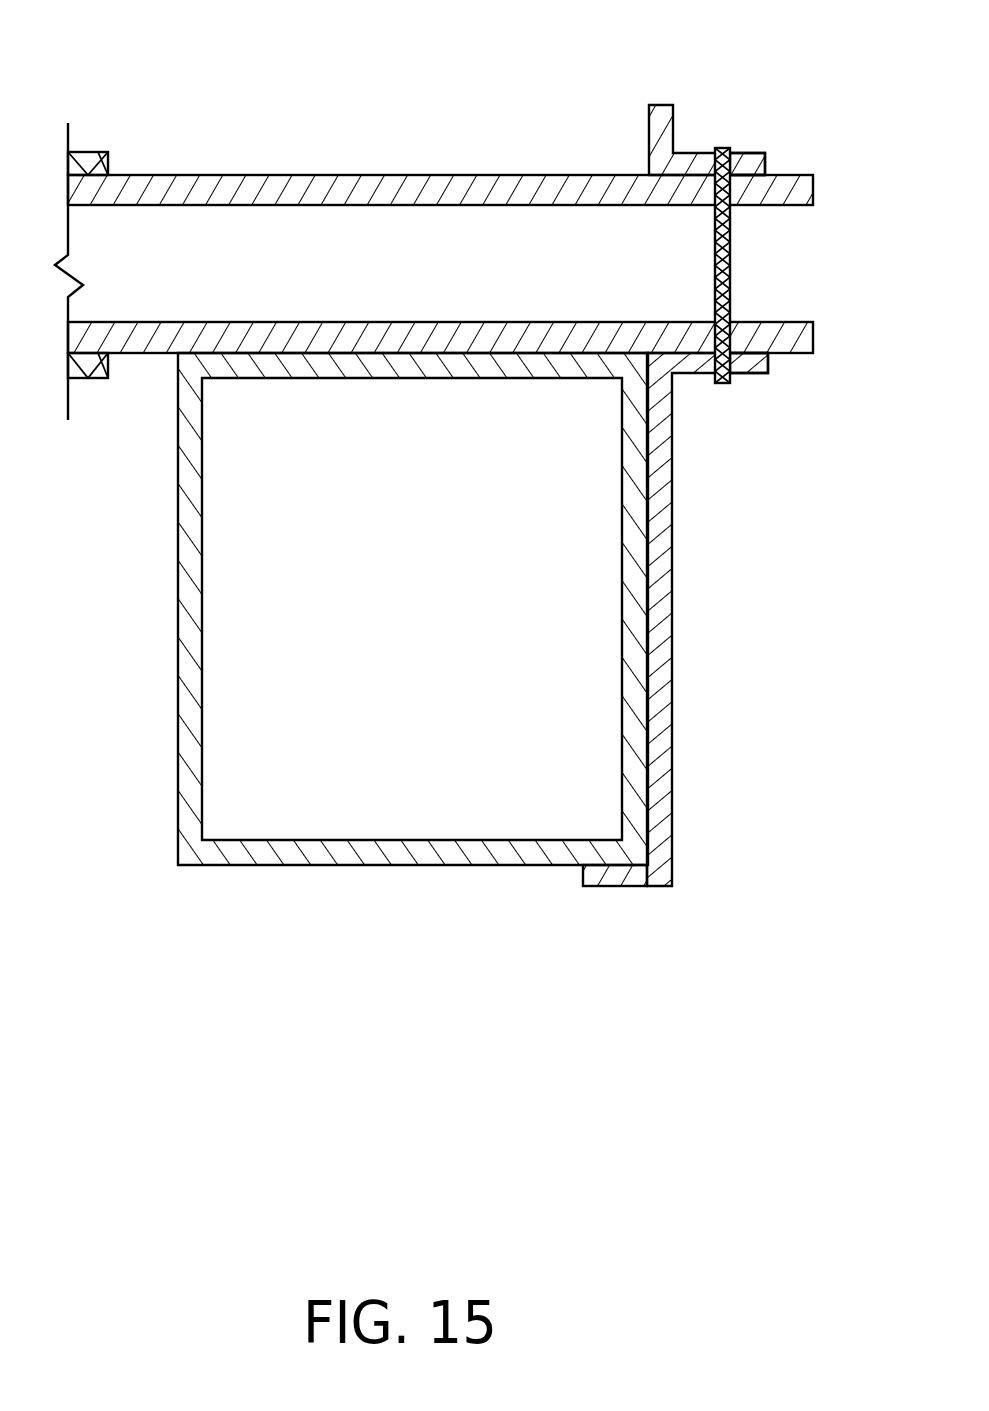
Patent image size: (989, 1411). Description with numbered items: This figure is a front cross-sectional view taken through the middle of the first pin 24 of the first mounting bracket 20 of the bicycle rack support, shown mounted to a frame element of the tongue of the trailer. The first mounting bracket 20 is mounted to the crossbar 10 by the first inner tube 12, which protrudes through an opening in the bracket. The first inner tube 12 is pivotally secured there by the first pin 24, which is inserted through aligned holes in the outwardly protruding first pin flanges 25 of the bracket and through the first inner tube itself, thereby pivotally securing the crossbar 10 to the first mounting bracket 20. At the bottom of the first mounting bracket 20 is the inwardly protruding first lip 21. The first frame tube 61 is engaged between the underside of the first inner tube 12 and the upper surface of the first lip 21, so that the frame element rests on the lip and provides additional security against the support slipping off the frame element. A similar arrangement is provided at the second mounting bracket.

The crossbar 10 is at (118, 100).
The first inner tube 12 is at (290, 183).
The first mounting bracket 20 is at (662, 545).
The first lip 21 is at (607, 880).
The first pin 24 is at (730, 248).
The first pin flanges 25 is at (755, 160).
The first frame tube 61 is at (187, 735).